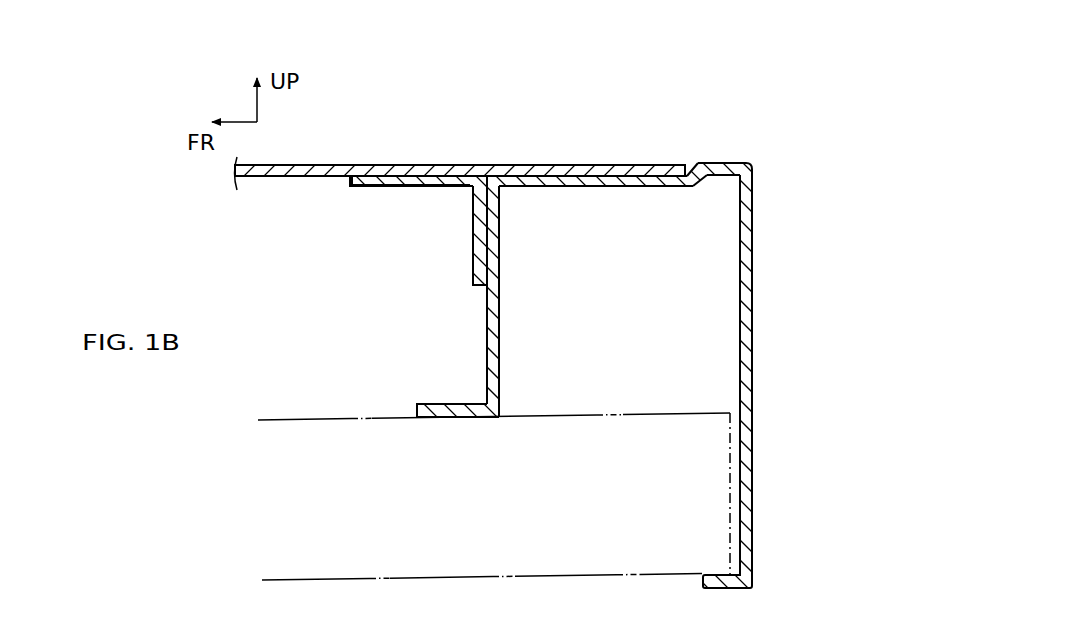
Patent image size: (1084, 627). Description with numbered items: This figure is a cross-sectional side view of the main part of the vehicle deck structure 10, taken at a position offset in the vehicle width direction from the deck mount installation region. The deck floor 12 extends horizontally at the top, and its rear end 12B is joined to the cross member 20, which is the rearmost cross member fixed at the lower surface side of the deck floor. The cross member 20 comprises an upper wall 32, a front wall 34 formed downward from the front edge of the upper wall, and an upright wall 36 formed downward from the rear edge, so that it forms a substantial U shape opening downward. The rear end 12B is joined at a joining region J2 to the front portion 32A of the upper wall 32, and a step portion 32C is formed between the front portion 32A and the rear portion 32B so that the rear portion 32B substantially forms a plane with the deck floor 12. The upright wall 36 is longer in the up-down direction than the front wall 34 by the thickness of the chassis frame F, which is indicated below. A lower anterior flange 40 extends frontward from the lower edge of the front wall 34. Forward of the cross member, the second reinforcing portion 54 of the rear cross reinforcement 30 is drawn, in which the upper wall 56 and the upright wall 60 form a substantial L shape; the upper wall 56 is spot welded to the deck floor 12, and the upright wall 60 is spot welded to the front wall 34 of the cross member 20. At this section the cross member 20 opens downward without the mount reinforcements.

The vehicle deck structure 10 is at (845, 59).
The deck floor 12 is at (314, 162).
The rear end of the deck floor 12B is at (651, 163).
The joining region J2 is at (578, 161).
The cross member 20 is at (758, 252).
The rear cross reinforcement 30 is at (342, 191).
The upper wall 32 is at (806, 70).
The front portion of the upper wall 32A is at (655, 180).
The rear portion of the upper wall 32B is at (728, 165).
The step portion 32C is at (690, 168).
The front wall 34 is at (493, 358).
The upright wall 36 is at (748, 333).
The lower anterior flange 40 is at (445, 404).
The second reinforcing portion 54 is at (300, 252).
The upper wall 56 is at (357, 188).
The upright wall 60 is at (477, 258).
The chassis frame F is at (462, 575).